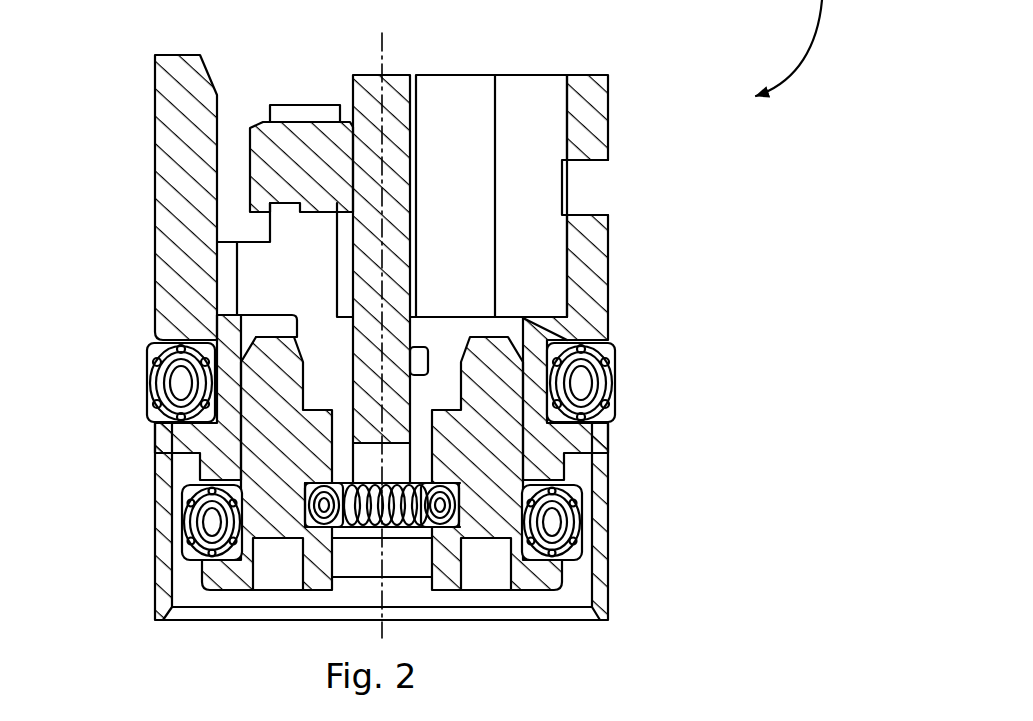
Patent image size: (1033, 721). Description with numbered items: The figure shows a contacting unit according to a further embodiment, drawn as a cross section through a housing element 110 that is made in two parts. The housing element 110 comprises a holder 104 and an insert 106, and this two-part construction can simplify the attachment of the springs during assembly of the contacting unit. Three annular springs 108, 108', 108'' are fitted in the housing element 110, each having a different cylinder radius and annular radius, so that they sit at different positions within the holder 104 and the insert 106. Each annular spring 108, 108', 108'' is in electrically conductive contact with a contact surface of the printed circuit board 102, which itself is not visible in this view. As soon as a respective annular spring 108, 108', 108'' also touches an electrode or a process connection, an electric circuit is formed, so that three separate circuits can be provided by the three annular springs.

The printed circuit board 102 is at (375, 281).
The holder 104 is at (598, 233).
The insert 106 is at (513, 378).
The annular spring 108 is at (468, 382).
The annular spring 108' is at (562, 492).
The annular spring 108'' is at (468, 530).
The housing element 110 is at (598, 136).